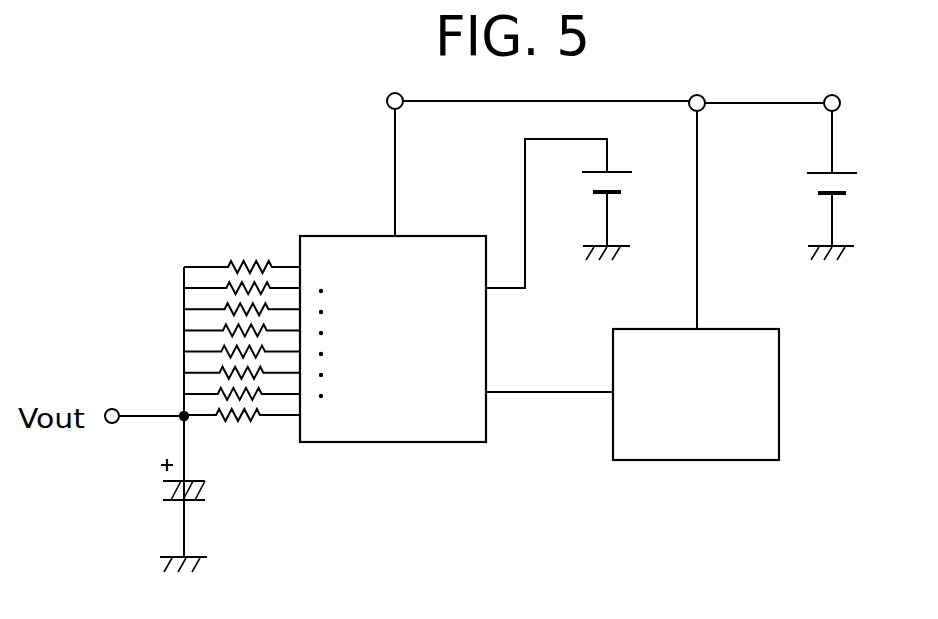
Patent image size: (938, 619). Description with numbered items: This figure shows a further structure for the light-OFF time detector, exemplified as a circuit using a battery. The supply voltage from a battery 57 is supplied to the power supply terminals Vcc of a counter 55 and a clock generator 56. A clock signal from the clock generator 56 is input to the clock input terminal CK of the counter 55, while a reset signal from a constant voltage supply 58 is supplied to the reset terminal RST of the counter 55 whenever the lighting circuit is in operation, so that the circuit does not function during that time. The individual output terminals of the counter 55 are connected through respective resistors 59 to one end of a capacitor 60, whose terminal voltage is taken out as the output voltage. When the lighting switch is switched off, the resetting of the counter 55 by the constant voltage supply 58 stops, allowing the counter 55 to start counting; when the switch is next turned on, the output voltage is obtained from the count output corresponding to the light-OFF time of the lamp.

The counter 55 is at (413, 442).
The clock generator 56 is at (708, 460).
The battery 57 is at (848, 170).
The constant voltage supply 58 is at (626, 170).
The resistors 59 is at (252, 262).
The capacitor 60 is at (197, 501).